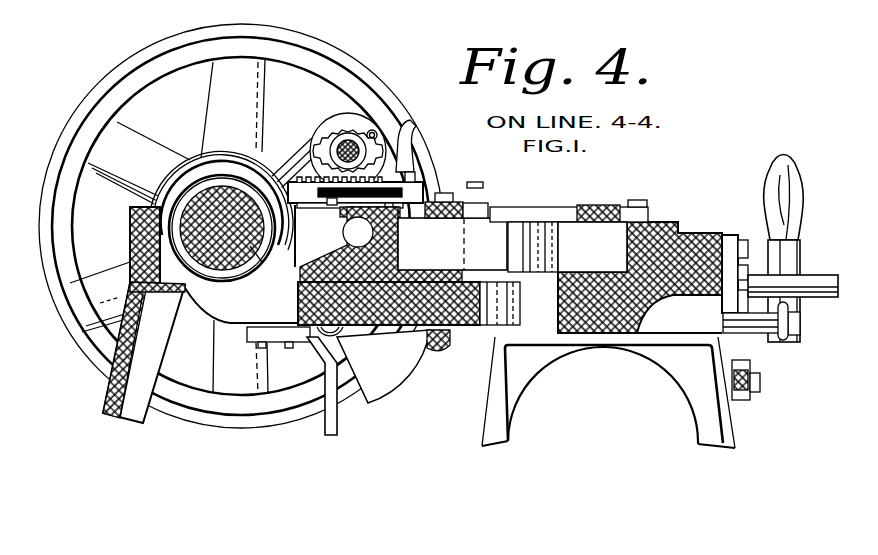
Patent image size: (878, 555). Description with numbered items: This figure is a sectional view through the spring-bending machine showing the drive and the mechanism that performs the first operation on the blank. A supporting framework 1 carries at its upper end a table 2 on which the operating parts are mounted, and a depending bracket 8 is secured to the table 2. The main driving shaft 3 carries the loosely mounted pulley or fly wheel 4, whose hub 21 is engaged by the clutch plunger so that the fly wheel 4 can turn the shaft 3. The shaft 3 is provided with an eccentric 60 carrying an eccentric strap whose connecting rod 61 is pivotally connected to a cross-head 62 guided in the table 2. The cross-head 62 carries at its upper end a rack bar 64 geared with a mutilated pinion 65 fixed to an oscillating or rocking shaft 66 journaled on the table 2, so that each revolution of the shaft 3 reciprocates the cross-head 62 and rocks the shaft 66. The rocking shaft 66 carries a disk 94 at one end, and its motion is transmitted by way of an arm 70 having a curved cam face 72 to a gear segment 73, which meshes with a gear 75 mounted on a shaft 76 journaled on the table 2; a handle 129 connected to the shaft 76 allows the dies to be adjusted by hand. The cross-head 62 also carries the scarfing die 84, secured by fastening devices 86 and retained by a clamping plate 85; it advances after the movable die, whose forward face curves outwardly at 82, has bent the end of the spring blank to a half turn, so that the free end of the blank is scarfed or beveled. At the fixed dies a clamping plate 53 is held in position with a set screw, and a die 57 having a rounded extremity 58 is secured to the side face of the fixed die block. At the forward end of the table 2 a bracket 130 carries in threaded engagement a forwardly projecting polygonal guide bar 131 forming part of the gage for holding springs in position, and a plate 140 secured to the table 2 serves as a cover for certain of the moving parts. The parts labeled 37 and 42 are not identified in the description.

The supporting framework 1 is at (147, 367).
The table 2 is at (312, 300).
The main driving shaft 3 is at (243, 245).
The pulley or fly wheel 4 is at (140, 58).
The depending bracket 8 is at (320, 357).
The hub 21 is at (203, 165).
The nut 37 is at (752, 372).
The washer 42 is at (760, 384).
The clamping plate 53 is at (597, 207).
The die 57 is at (592, 247).
The rounded extremity 58 is at (550, 223).
The eccentric 60 is at (213, 262).
The connecting rod 61 is at (269, 261).
The cross-head 62 is at (347, 253).
The rack bar 64 is at (405, 190).
The mutilated pinion 65 is at (323, 145).
The oscillating or rocking shaft 66 is at (348, 140).
The arm 70 is at (412, 142).
The cam face 72 is at (404, 128).
The gear segment 73 is at (373, 365).
The gear 75 is at (440, 352).
The shaft 76 is at (800, 324).
The outwardly curved front face 82 is at (520, 222).
The scarfing die 84 is at (452, 244).
The clamping plate 85 is at (476, 207).
The fastening devices 86 is at (440, 200).
The disk 94 is at (358, 122).
The handle 129 is at (798, 194).
The bracket 130 is at (730, 236).
The guide bar 131 is at (818, 282).
The plate 140 is at (552, 224).